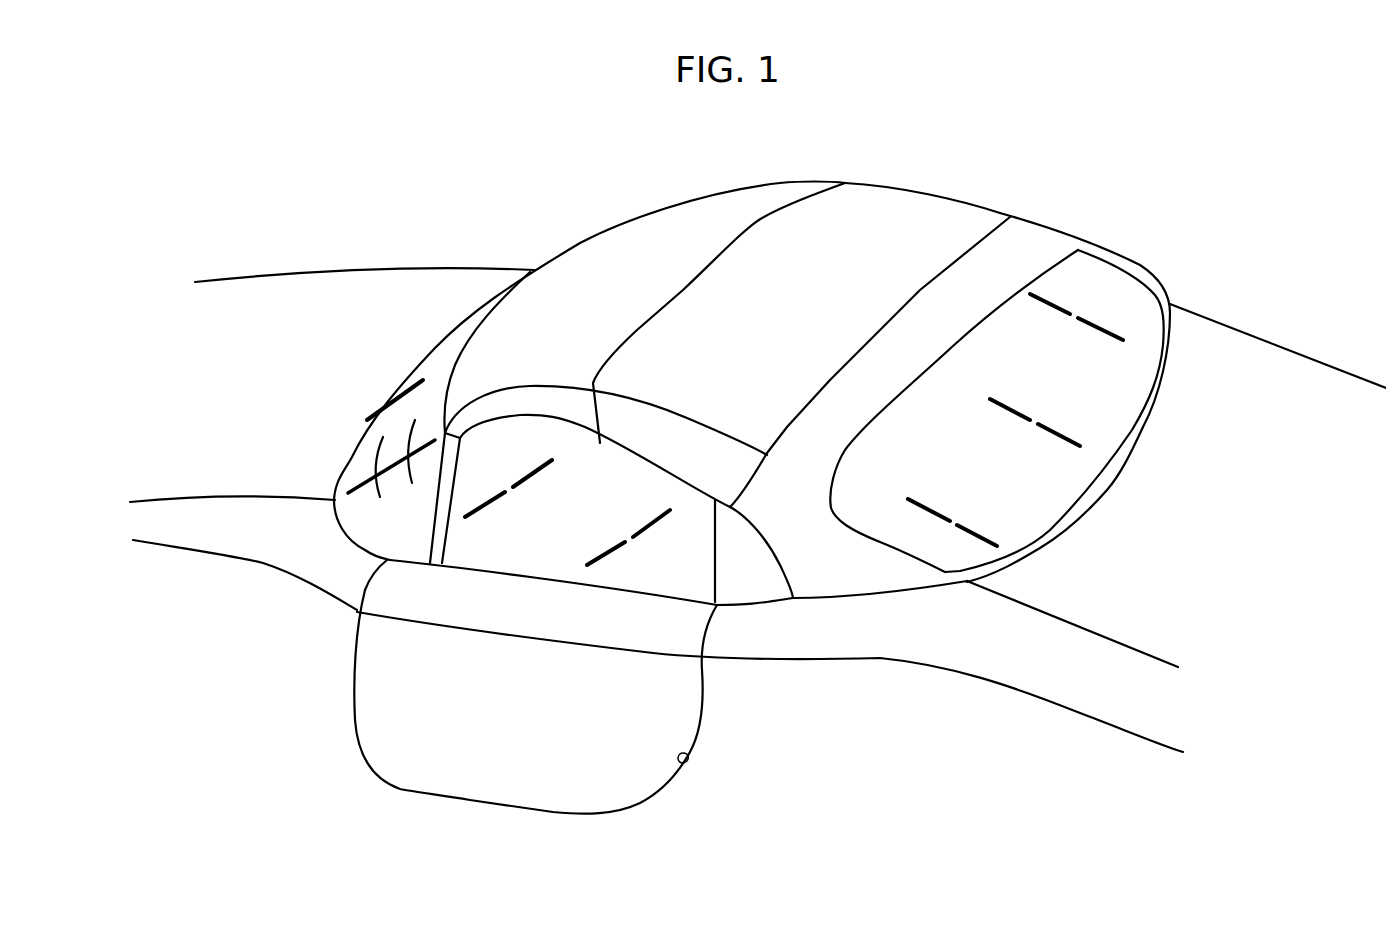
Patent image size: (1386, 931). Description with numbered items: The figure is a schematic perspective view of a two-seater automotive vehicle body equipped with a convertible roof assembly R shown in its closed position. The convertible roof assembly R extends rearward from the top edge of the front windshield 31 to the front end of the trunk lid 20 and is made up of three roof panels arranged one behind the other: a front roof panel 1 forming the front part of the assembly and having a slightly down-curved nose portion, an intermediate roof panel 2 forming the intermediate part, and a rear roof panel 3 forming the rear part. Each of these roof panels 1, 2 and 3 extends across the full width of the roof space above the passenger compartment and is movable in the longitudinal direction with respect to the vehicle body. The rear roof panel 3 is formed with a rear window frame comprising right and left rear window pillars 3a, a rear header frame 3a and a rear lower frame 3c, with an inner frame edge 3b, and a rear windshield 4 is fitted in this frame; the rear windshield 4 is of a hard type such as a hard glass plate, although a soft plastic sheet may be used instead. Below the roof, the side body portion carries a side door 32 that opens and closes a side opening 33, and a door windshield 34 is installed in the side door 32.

The convertible roof assembly R is at (1096, 145).
The front roof panel 1 is at (748, 205).
The intermediate roof panel 2 is at (912, 207).
The rear roof panel 3 is at (1052, 228).
The rear window pillar 3a is at (1143, 277).
The inner edge of frame 3b is at (898, 388).
The rear lower frame 3c is at (1158, 384).
The rear windshield 4 is at (1107, 430).
The trunk lid 20 is at (1249, 561).
The front windshield 31 is at (432, 353).
The side door 32 is at (455, 785).
The side opening 33 is at (682, 763).
The door windshield 34 is at (574, 530).